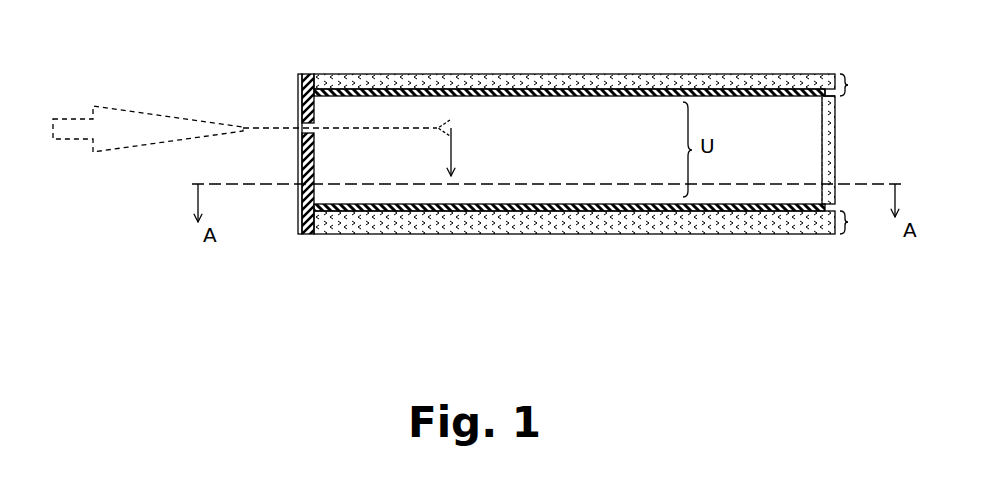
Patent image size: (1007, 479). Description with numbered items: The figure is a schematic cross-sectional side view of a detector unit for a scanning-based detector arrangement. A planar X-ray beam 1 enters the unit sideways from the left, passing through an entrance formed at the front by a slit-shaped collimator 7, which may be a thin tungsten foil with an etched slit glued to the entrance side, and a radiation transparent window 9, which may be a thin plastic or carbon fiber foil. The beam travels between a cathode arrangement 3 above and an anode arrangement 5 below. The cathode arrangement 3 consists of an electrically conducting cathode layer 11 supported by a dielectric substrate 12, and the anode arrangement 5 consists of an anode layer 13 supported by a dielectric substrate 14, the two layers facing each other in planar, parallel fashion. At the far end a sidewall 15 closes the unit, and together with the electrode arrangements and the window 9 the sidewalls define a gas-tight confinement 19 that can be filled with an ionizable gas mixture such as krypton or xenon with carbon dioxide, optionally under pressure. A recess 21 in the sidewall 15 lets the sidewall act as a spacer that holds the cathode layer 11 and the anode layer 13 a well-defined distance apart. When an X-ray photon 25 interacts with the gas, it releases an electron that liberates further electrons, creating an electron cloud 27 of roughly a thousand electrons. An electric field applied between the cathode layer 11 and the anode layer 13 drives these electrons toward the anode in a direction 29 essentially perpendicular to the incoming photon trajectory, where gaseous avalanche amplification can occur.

The planar X-ray beam 1 is at (128, 108).
The cathode arrangement 3 is at (855, 86).
The anode arrangement 5 is at (855, 222).
The slit-shaped collimator 7 is at (308, 73).
The radiation transparent window 9 is at (296, 200).
The cathode layer 11 is at (757, 97).
The dielectric substrate 12 is at (672, 74).
The anode layer 13 is at (757, 204).
The dielectric substrate 14 is at (565, 234).
The sidewall 15 is at (836, 112).
The gas-tight confinement 19 is at (812, 145).
The recess 21 is at (828, 74).
The X-ray photon 25 is at (272, 130).
The electron cloud 27 is at (457, 129).
The direction of electron drift 29 is at (457, 140).